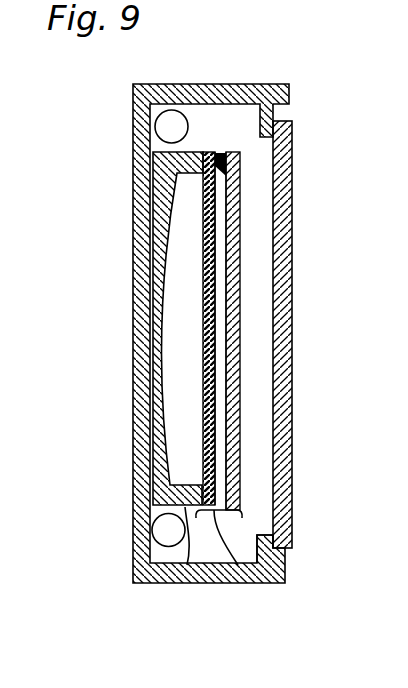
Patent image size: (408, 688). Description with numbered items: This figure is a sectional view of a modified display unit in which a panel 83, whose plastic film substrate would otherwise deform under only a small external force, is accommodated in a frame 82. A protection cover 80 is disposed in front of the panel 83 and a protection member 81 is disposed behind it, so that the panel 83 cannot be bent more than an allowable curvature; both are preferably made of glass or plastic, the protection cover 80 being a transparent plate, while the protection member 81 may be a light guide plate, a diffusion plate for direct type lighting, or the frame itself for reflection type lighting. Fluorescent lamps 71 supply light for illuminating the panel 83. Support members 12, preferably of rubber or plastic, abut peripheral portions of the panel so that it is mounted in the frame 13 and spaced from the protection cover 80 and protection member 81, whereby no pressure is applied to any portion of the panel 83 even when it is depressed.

The support members 12 is at (181, 582).
The frame 13 is at (288, 97).
The fluorescent lamps 71 is at (166, 126).
The protection cover 80 is at (282, 480).
The protection member 81 is at (157, 478).
The frame 82 is at (216, 576).
The panel 83 is at (266, 588).